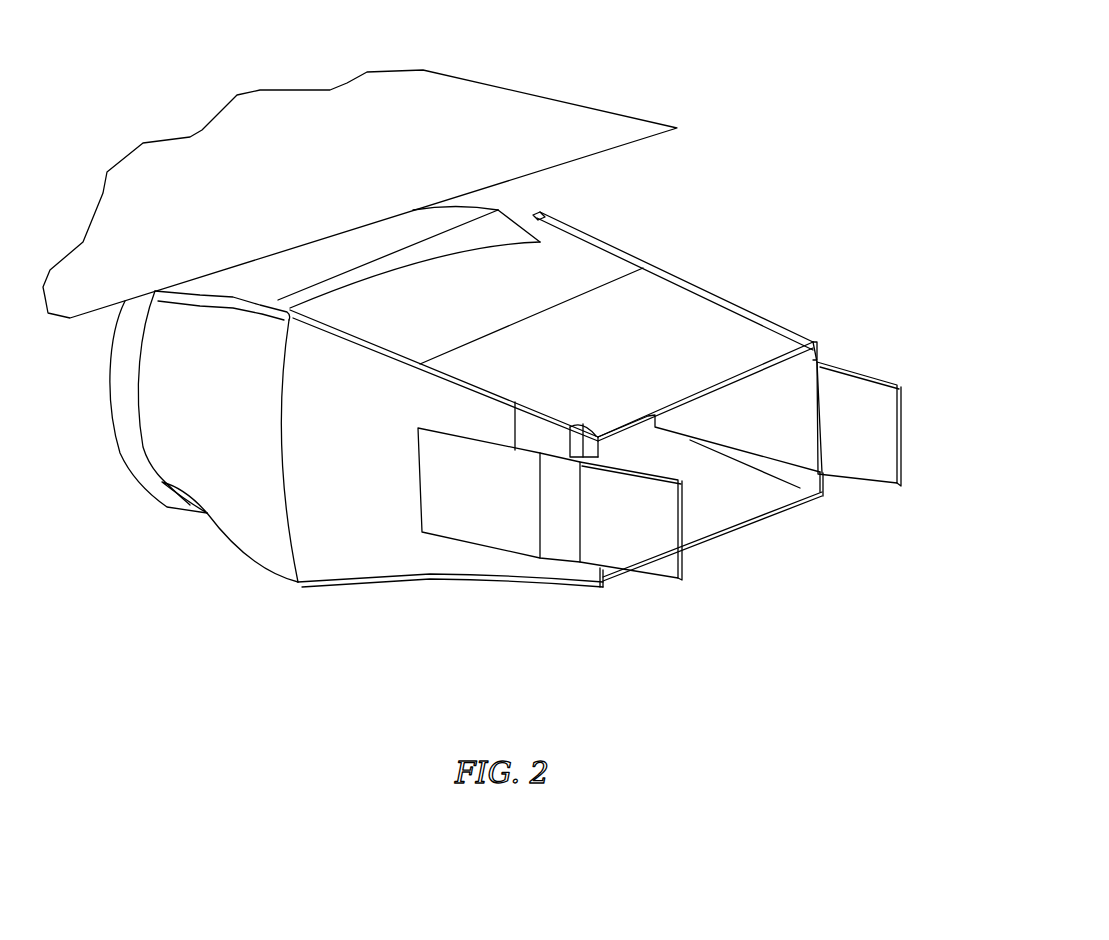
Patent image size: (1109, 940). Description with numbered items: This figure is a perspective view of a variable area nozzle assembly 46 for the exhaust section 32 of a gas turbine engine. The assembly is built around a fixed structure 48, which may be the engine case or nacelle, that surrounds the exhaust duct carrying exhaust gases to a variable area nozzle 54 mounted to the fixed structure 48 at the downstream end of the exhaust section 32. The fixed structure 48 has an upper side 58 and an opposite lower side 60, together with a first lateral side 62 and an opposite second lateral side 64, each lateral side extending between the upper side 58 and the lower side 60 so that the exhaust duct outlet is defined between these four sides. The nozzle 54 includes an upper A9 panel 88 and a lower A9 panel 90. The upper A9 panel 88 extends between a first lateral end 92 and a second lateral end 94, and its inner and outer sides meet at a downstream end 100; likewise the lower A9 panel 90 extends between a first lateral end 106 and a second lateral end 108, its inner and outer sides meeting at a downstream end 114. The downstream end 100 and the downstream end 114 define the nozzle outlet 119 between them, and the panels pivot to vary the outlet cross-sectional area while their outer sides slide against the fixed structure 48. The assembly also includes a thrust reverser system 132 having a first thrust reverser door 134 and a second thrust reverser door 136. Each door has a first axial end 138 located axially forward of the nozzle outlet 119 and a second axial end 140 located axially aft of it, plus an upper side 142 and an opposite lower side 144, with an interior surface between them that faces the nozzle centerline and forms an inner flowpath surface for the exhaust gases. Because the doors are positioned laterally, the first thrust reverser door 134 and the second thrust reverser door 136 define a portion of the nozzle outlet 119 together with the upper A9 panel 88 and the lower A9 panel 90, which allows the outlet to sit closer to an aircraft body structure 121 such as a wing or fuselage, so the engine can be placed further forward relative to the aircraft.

The exhaust section 32 is at (773, 112).
The variable area nozzle assembly 46 is at (787, 192).
The fixed structure 48 is at (168, 522).
The variable area nozzle 54 is at (788, 315).
The upper side 58 is at (535, 270).
The lower side 60 is at (355, 589).
The first lateral side 62 is at (340, 503).
The second lateral side 64 is at (676, 261).
The upper A9 panel 88 is at (698, 320).
The lower A9 panel 90 is at (718, 513).
The first lateral end 92 is at (482, 383).
The second lateral end 94 is at (757, 318).
The downstream end 100 is at (767, 365).
The first lateral end 106 is at (603, 587).
The second lateral end 108 is at (790, 488).
The downstream end 114 is at (716, 540).
The nozzle outlet 119 is at (774, 529).
The aircraft body structure 121 is at (498, 108).
The thrust reverser system 132 is at (912, 445).
The first thrust reverser door 134 is at (563, 530).
The second thrust reverser door 136 is at (880, 408).
The first axial end 138 is at (422, 480).
The second axial end 140 is at (692, 535).
The upper side 142 is at (585, 442).
The lower side 144 is at (507, 550).